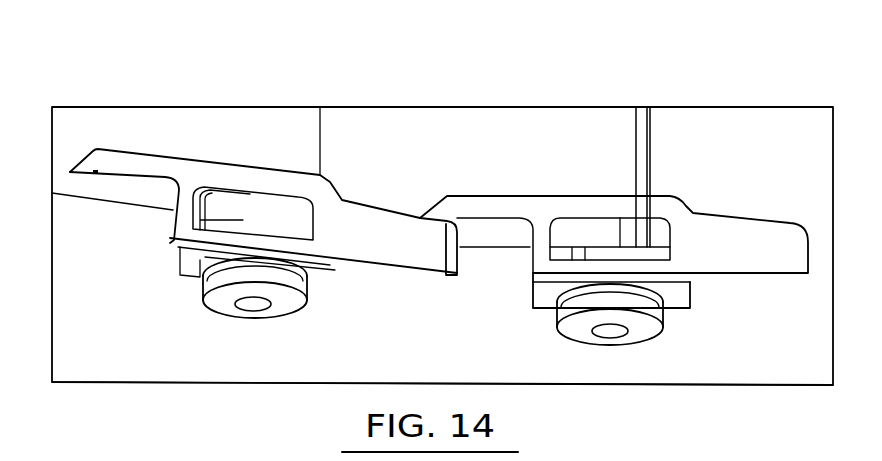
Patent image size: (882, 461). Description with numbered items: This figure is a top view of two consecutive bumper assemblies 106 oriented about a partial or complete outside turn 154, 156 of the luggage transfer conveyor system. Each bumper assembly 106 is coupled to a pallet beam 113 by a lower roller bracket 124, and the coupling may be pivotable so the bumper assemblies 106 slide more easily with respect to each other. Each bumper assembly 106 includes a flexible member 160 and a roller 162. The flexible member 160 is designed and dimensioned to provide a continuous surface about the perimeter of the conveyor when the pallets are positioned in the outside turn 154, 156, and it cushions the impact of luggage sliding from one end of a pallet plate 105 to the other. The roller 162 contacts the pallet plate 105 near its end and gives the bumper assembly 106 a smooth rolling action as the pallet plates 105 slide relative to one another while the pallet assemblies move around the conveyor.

The pallet plate 105 is at (118, 120).
The bumper assembly 106 is at (240, 79).
The pallet beam 113 is at (642, 124).
The lower roller bracket 124 is at (218, 220).
The partial outside turn 154 is at (512, 78).
The complete outside turn 156 is at (442, 203).
The flexible member 160 is at (380, 262).
The roller 162 is at (300, 290).